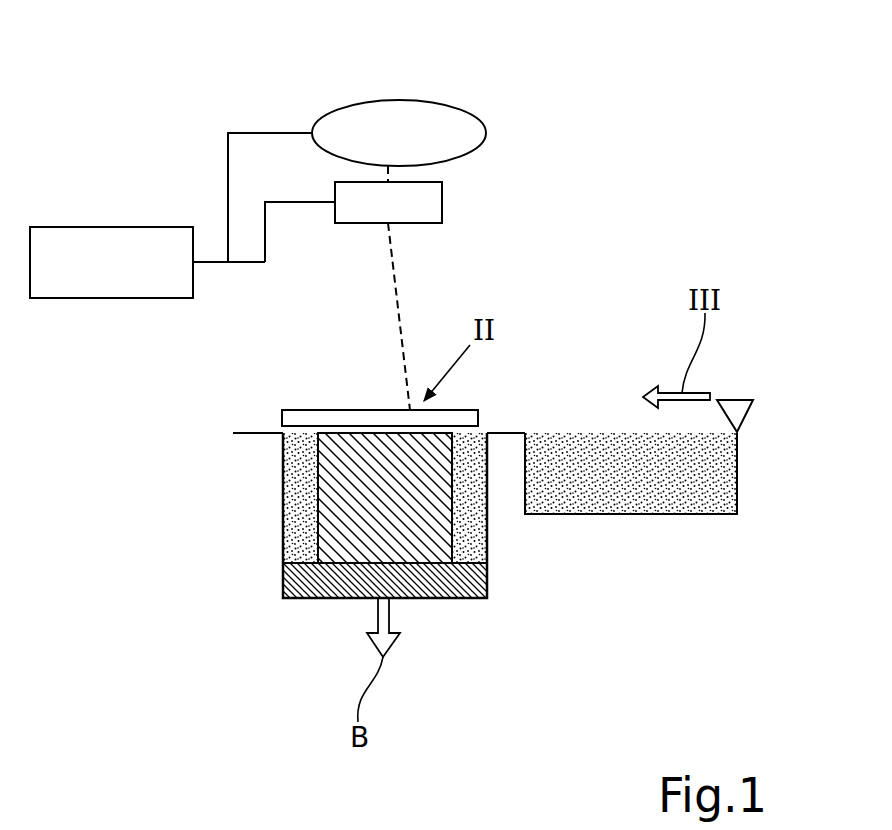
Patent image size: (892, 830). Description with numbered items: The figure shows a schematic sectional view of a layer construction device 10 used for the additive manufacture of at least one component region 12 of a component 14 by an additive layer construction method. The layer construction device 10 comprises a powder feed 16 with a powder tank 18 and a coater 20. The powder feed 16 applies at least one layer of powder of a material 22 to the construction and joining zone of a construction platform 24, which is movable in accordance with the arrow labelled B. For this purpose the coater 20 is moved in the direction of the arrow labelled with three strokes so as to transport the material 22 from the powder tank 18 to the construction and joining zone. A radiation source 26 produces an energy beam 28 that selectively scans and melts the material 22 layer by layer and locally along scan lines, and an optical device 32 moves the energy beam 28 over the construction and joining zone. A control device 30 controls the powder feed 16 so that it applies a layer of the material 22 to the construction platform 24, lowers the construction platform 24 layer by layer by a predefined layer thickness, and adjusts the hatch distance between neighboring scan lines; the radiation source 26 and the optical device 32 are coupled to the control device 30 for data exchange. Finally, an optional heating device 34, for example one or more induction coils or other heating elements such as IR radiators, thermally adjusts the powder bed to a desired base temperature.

The layer construction device 10 is at (648, 222).
The component region 12 is at (337, 545).
The component 14 is at (318, 502).
The powder feed 16 is at (589, 418).
The powder tank 18 is at (695, 515).
The coater 20 is at (735, 413).
The material 22 is at (467, 553).
The construction platform 24 is at (308, 600).
The radiation source 26 is at (400, 120).
The energy beam 28 is at (393, 260).
The control device 30 is at (103, 252).
The optical device 32 is at (428, 203).
The heating device 34 is at (303, 410).